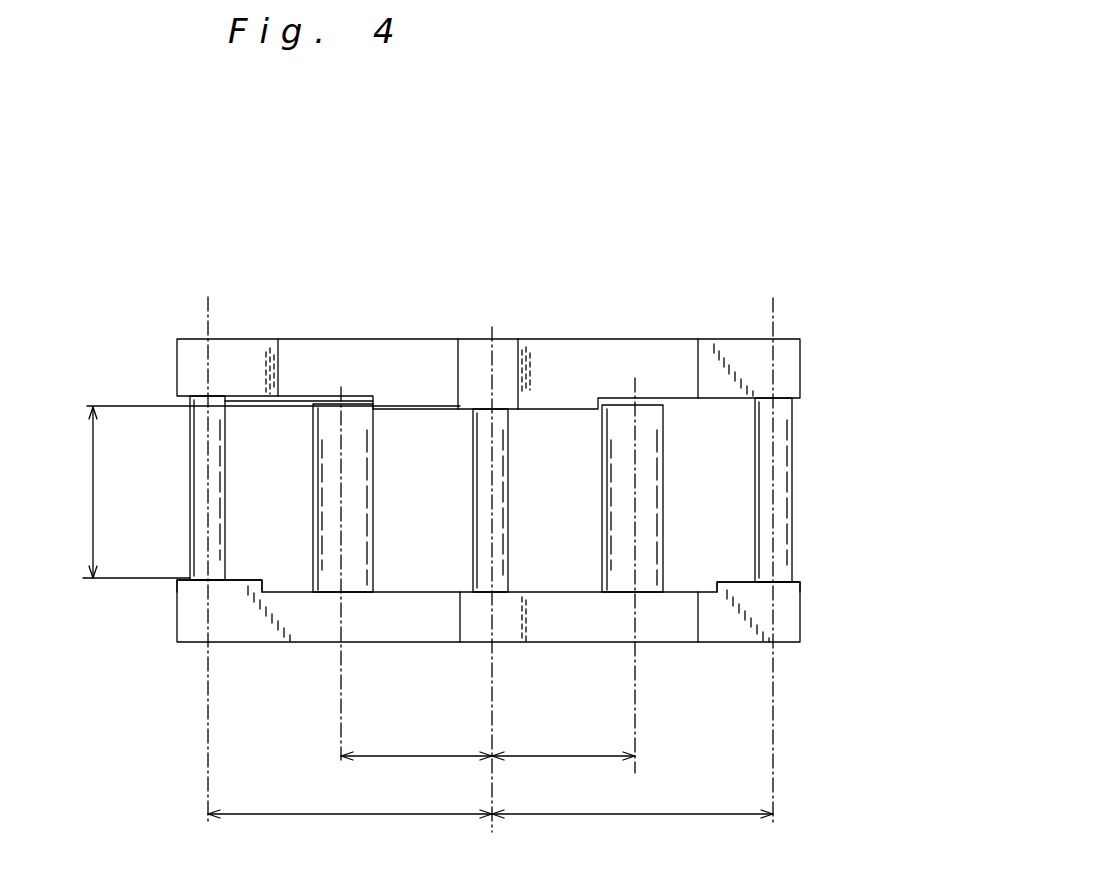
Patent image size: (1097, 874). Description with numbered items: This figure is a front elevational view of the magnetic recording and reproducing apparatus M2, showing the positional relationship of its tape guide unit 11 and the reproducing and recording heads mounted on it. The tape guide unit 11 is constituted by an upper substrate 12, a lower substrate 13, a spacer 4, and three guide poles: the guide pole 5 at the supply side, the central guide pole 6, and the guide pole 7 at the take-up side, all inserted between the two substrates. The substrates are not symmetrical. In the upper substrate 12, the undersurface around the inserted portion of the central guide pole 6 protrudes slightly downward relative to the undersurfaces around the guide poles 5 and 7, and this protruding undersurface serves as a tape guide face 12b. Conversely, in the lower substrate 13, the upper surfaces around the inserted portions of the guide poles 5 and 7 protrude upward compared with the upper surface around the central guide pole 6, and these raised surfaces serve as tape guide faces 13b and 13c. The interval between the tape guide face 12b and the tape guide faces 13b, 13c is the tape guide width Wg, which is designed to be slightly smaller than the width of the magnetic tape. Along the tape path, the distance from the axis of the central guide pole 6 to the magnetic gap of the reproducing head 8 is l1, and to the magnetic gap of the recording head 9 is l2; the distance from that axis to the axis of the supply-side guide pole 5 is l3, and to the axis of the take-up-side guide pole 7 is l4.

The magnetic recording and reproducing apparatus M2 is at (648, 222).
The upper substrate 12 is at (382, 338).
The tape guide face 12b is at (462, 424).
The tape guide unit 11 is at (648, 338).
The lower substrate 13 is at (378, 642).
The tape guide face 13b is at (202, 578).
The tape guide face 13c is at (778, 582).
The guide pole 5 is at (190, 467).
The reproducing head 8 is at (313, 535).
The central guide pole 6 is at (508, 445).
The recording head 9 is at (663, 535).
The guide pole 7 is at (792, 422).
The spacer 4 is at (400, 500).
The tape guide width Wg is at (248, 492).
The distance between central guide pole axis and reproducing head gap l1 is at (416, 738).
The distance between central guide pole axis and recording head gap l2 is at (563, 738).
The distance between central guide pole axis and supply-side guide pole axis l3 is at (350, 797).
The distance between central guide pole axis and take-up-side guide pole axis l4 is at (632, 797).